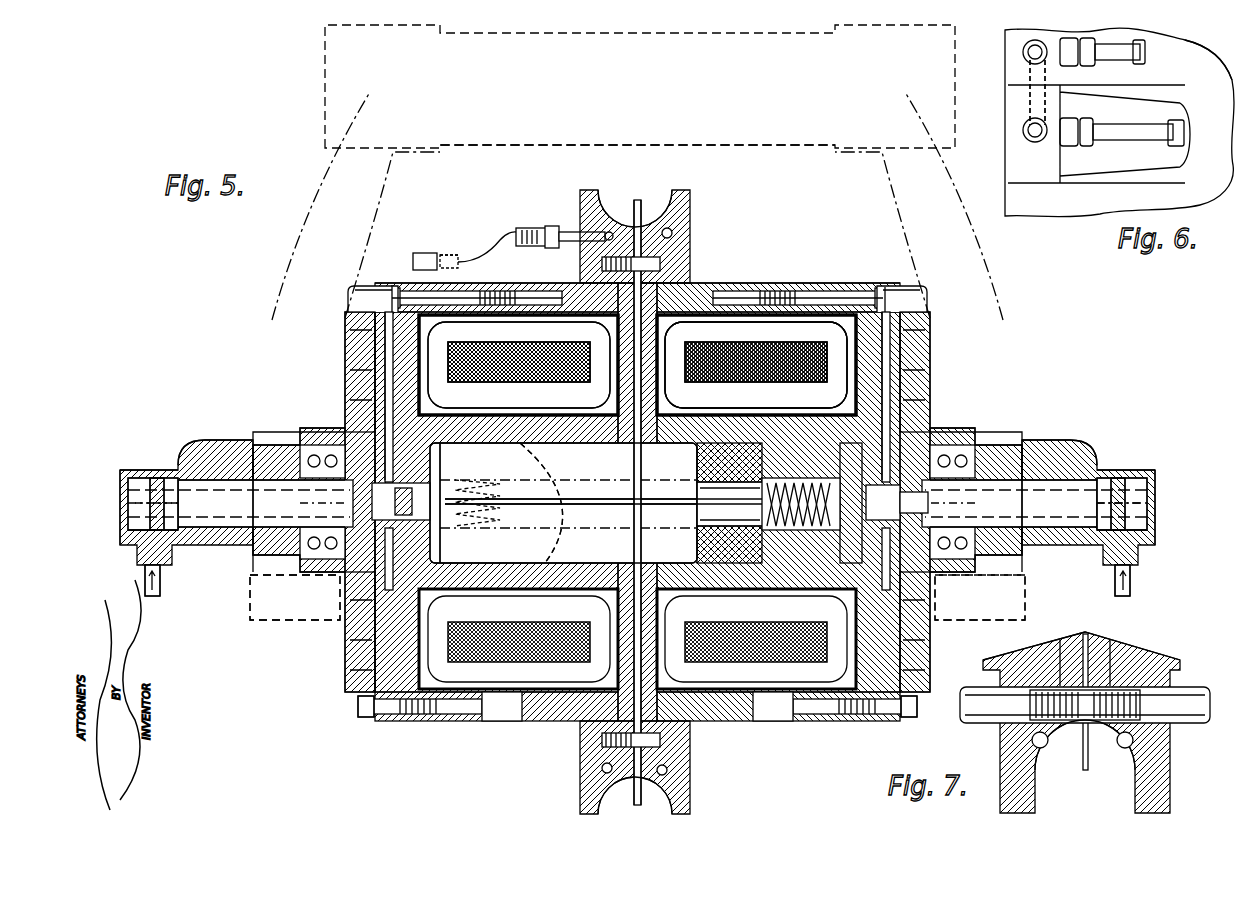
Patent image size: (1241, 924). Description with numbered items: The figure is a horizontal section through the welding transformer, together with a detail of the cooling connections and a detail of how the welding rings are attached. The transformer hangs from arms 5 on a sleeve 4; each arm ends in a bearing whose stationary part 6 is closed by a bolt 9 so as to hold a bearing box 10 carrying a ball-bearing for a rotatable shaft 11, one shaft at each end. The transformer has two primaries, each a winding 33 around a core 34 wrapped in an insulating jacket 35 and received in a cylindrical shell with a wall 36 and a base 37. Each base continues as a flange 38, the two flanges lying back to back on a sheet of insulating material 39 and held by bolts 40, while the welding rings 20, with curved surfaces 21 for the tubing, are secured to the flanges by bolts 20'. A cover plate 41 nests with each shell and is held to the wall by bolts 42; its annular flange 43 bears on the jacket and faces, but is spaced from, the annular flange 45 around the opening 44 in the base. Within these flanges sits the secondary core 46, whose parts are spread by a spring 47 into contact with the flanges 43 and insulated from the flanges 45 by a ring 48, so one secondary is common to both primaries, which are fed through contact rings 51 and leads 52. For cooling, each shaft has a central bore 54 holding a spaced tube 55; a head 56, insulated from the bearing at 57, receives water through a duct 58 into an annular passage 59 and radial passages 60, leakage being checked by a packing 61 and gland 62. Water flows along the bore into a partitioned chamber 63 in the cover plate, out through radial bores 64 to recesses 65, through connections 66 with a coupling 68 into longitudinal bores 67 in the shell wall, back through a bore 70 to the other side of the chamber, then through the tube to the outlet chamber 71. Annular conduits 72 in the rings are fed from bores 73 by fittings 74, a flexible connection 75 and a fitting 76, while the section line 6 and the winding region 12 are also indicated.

In FIG. 5, the sleeve 4 is at (830, 160).
In FIG. 5, the arms 5 is at (268, 312).
In FIG. 5, the stationary part 6 is at (520, 250).
In FIG. 5, the bolt 9 is at (390, 770).
In FIG. 5, the bearing box 10 is at (1000, 430).
In FIG. 5, the rotatable shaft 11 is at (786, 608).
In FIG. 5, the coil winding 12 is at (694, 608).
In FIG. 5, the welding rings 20 is at (645, 488).
In FIG. 7, the welding rings 20 is at (1079, 724).
In FIG. 7, the bolts 20' is at (1081, 687).
In FIG. 5, the curved surfaces 21 is at (612, 797).
In FIG. 7, the curved surfaces 21 is at (1060, 792).
In FIG. 5, the winding 33 is at (770, 322).
In FIG. 5, the core 34 is at (730, 345).
In FIG. 5, the insulating jacket 35 is at (515, 705).
In FIG. 5, the wall 36 is at (758, 287).
In FIG. 6, the wall 36 is at (1192, 82).
In FIG. 5, the base 37 is at (660, 326).
In FIG. 7, the base 37 is at (1150, 660).
In FIG. 5, the flange 38 is at (692, 760).
In FIG. 7, the flange 38 is at (1125, 666).
In FIG. 5, the sheet of insulating material 39 is at (700, 412).
In FIG. 7, the sheet of insulating material 39 is at (1086, 642).
In FIG. 5, the bolts 40 is at (598, 746).
In FIG. 5, the cover plate 41 is at (340, 580).
In FIG. 5, the bolts 42 is at (900, 716).
In FIG. 5, the annular flange 43 is at (606, 503).
In FIG. 5, the opening 44 is at (580, 497).
In FIG. 5, the annular flange 45 is at (713, 503).
In FIG. 5, the core 46 is at (766, 500).
In FIG. 5, the spring 47 is at (801, 489).
In FIG. 5, the ring 48 is at (573, 503).
In FIG. 5, the contact rings 51 is at (935, 400).
In FIG. 5, the leads 52 is at (935, 650).
In FIG. 5, the central bore 54 is at (1130, 478).
In FIG. 5, the tube 55 is at (770, 528).
In FIG. 5, the head 56 is at (1120, 451).
In FIG. 5, the insulation 57 is at (1060, 450).
In FIG. 5, the duct 58 is at (1135, 580).
In FIG. 5, the annular passage 59 is at (1130, 520).
In FIG. 5, the radial passages 60 is at (1150, 470).
In FIG. 5, the packing 61 is at (1128, 478).
In FIG. 5, the gland 62 is at (1080, 540).
In FIG. 5, the chamber 63 is at (940, 435).
In FIG. 5, the radially extending bores 64 is at (936, 318).
In FIG. 5, the recesses 65 is at (896, 290).
In FIG. 5, the connections 66 is at (891, 289).
In FIG. 6, the connections 66 is at (1028, 141).
In FIG. 5, the longitudinally extending bores 67 is at (732, 296).
In FIG. 5, the coupling 68 is at (885, 287).
In FIG. 6, the coupling 68 is at (1076, 126).
In FIG. 5, the radially extending bore 70 is at (770, 548).
In FIG. 5, the chamber 71 is at (1150, 503).
In FIG. 5, the annular conduits 72 is at (690, 779).
In FIG. 7, the annular conduits 72 is at (1140, 741).
In FIG. 6, the bores 73 is at (1038, 100).
In FIG. 5, the fittings 74 is at (428, 247).
In FIG. 6, the fittings 74 is at (1112, 56).
In FIG. 5, the flexible connection 75 is at (492, 240).
In FIG. 5, the fitting 76 is at (543, 230).